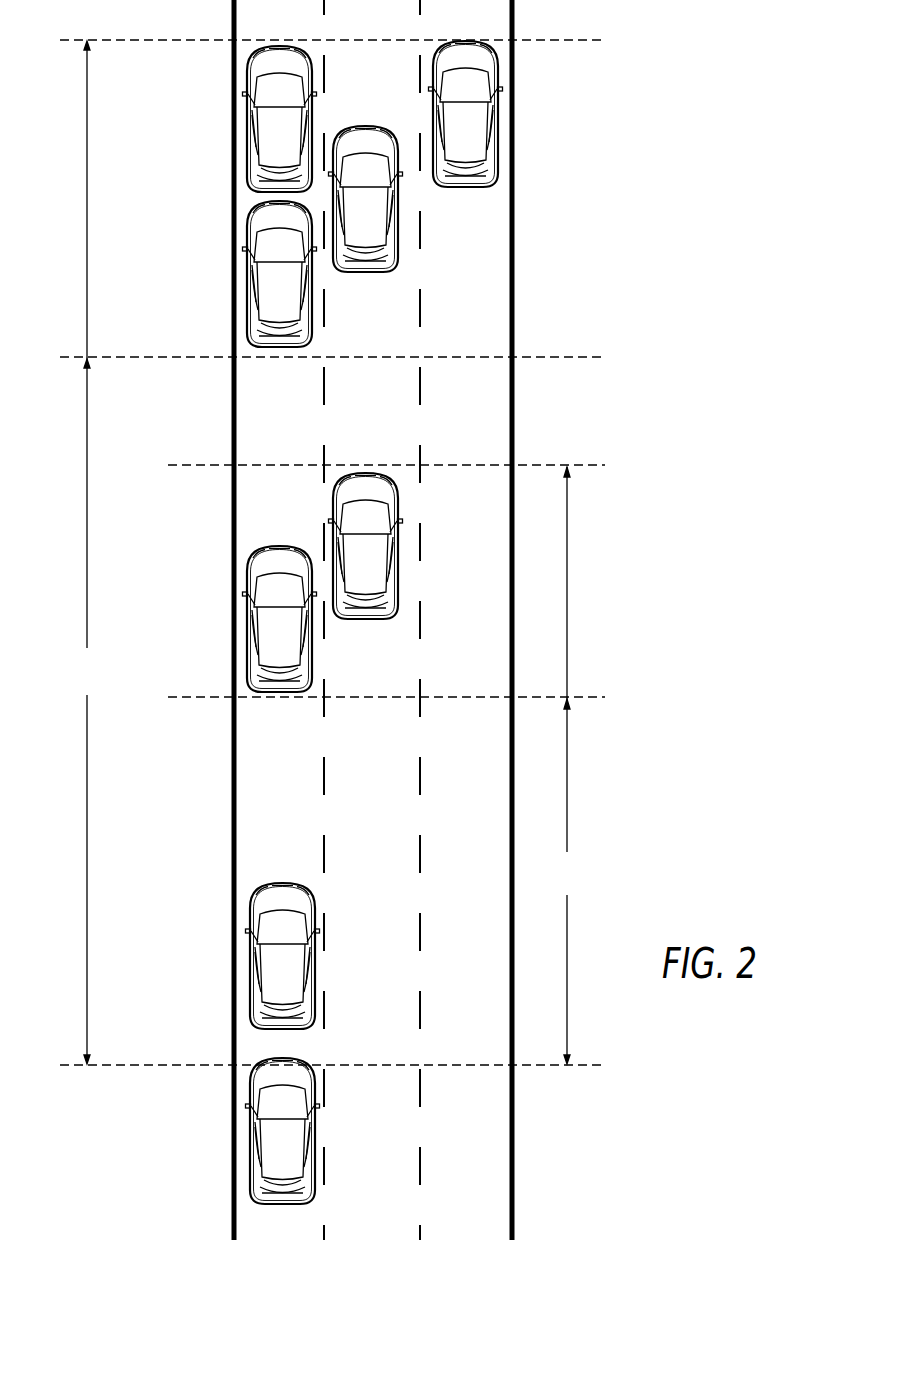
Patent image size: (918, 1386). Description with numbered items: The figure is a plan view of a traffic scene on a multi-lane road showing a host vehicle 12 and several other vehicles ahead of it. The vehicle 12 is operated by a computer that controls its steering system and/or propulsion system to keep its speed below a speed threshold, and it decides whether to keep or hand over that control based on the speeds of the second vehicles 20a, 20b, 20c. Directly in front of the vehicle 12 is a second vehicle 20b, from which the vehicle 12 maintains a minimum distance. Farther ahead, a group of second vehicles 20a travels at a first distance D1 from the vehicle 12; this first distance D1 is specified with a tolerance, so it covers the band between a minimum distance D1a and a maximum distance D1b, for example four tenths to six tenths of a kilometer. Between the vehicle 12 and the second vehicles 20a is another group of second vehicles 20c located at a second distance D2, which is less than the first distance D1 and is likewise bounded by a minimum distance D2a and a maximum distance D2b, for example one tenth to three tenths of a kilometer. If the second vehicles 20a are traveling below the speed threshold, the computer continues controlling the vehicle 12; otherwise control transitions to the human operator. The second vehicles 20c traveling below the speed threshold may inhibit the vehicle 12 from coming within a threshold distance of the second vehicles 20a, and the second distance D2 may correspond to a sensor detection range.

The vehicle 12 is at (250, 1148).
The second vehicle 20a is at (247, 137).
The second vehicle 20b is at (250, 973).
The second vehicle 20c is at (247, 640).
The first distance D1 is at (87, 552).
The minimum distance D1a is at (357, 357).
The maximum distance D1b is at (357, 40).
The second distance D2 is at (564, 765).
The minimum distance D2a is at (411, 697).
The maximum distance D2b is at (411, 465).